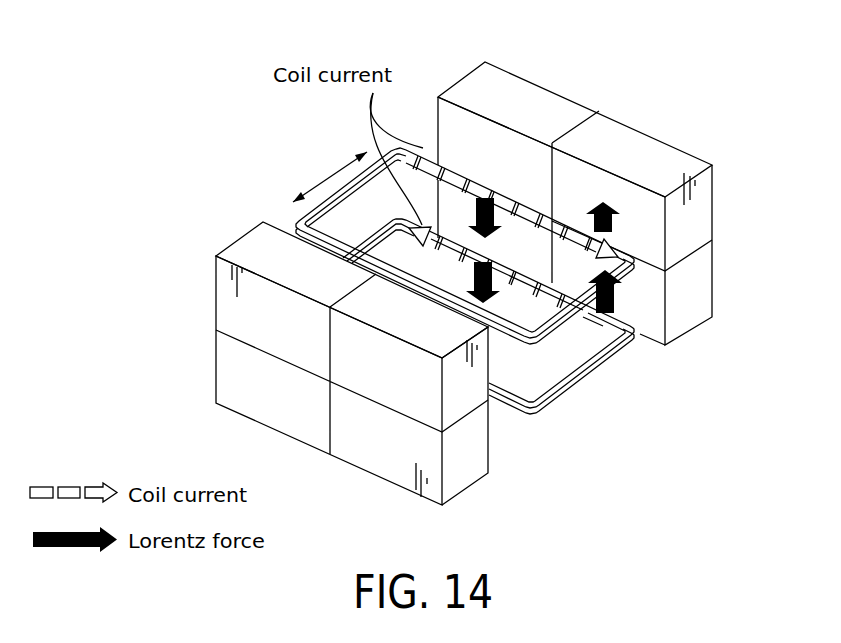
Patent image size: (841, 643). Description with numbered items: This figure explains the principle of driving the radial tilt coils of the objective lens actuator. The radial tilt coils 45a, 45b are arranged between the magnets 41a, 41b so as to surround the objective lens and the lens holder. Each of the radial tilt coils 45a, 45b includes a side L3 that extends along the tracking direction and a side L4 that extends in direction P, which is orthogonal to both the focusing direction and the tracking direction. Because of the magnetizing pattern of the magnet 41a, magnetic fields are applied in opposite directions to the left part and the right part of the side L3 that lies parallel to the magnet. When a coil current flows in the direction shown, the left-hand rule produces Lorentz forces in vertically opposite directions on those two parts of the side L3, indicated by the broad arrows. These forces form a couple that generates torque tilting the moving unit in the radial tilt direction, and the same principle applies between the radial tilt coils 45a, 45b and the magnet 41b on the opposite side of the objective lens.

The magnet 41a is at (472, 82).
The magnet 41b is at (247, 242).
The radial tilt coil 45a is at (655, 282).
The radial tilt coil 45b is at (612, 368).
The side L3 is at (513, 198).
The side L4 is at (580, 322).
The direction P is at (330, 174).